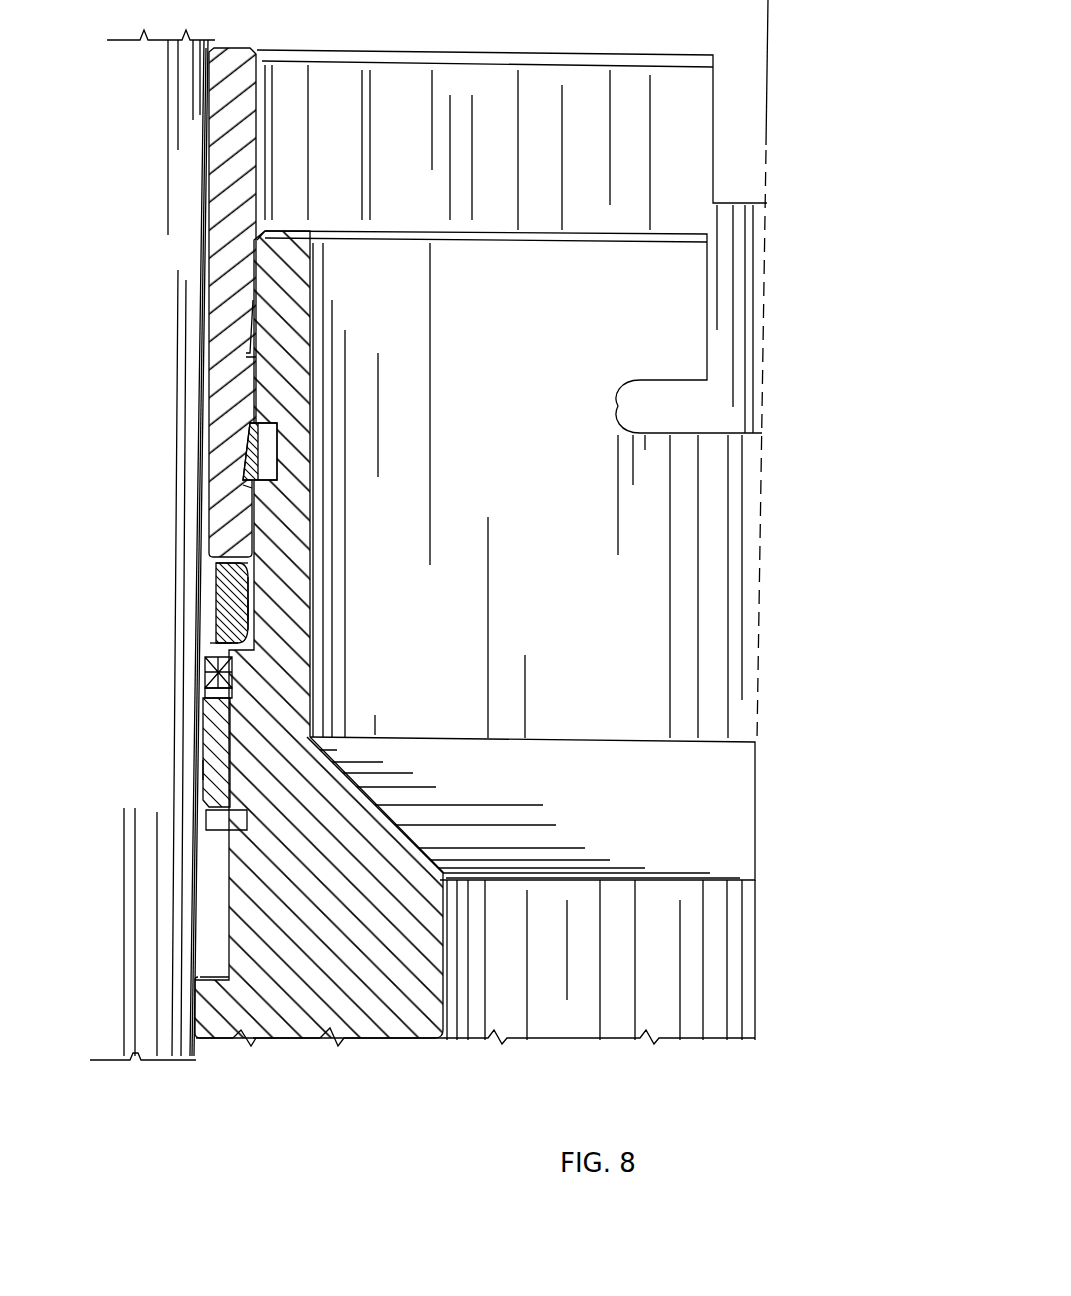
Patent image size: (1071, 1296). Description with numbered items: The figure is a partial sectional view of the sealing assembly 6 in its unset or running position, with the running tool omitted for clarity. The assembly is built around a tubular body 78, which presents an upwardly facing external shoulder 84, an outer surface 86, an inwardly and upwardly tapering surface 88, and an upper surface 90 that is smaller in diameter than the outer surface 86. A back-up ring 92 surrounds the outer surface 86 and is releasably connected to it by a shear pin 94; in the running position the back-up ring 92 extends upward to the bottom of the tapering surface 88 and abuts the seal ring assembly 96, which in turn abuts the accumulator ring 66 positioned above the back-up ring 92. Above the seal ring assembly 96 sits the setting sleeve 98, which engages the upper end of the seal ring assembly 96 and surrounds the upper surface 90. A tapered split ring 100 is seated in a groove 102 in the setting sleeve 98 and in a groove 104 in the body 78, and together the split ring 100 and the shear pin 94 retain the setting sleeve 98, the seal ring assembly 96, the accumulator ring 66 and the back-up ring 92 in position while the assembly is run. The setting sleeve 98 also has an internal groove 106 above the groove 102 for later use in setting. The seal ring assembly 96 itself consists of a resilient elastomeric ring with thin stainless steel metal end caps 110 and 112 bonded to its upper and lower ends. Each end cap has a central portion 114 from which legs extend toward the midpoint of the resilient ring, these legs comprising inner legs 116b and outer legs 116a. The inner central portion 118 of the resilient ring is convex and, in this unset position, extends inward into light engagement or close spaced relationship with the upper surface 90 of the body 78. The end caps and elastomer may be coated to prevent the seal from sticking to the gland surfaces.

The sealing assembly 6 is at (327, 1120).
The accumulator ring 66 is at (235, 697).
The tubular body 78 is at (382, 1040).
The upwardly facing external shoulder 84 is at (219, 973).
The outer surface 86 is at (218, 766).
The inwardly and upwardly tapering surface 88 is at (217, 638).
The upper surface 90 is at (253, 383).
The back-up ring 92 is at (204, 740).
The shear pin 94 is at (270, 818).
The seal ring assembly 96 is at (222, 605).
The setting sleeve 98 is at (207, 450).
The tapered split ring 100 is at (243, 487).
The groove 102 is at (272, 458).
The groove 104 is at (240, 518).
The internal groove 106 is at (260, 330).
The metal end cap 110 is at (205, 676).
The metal end cap 112 is at (230, 540).
The central portion 114 is at (225, 650).
The outer legs 116a is at (218, 572).
The inner legs 116b is at (228, 568).
The inner central portion 118 is at (252, 608).